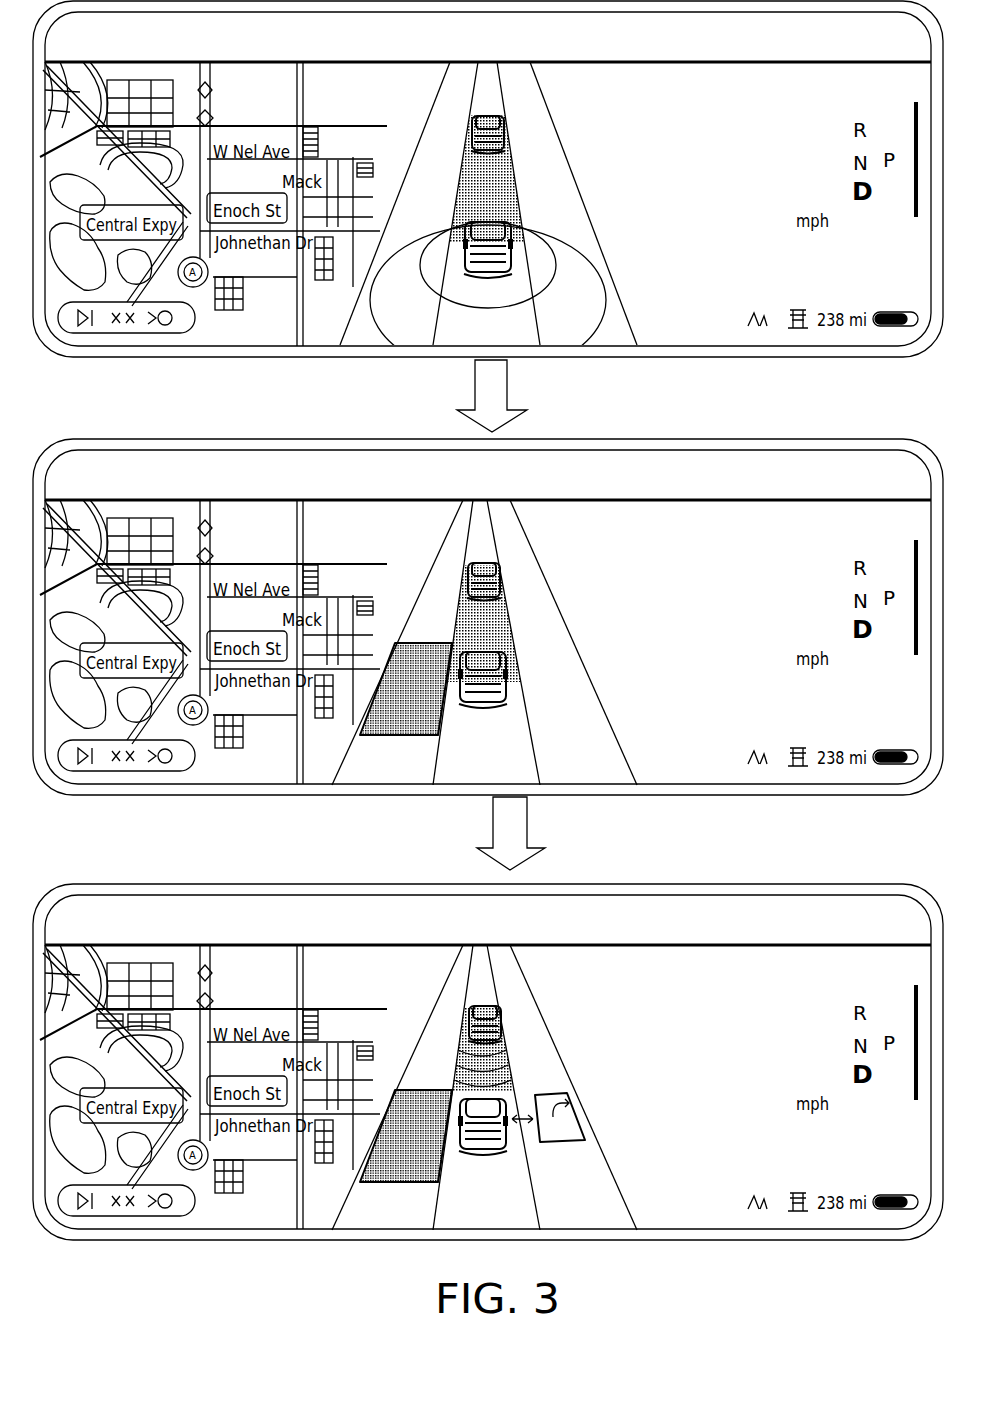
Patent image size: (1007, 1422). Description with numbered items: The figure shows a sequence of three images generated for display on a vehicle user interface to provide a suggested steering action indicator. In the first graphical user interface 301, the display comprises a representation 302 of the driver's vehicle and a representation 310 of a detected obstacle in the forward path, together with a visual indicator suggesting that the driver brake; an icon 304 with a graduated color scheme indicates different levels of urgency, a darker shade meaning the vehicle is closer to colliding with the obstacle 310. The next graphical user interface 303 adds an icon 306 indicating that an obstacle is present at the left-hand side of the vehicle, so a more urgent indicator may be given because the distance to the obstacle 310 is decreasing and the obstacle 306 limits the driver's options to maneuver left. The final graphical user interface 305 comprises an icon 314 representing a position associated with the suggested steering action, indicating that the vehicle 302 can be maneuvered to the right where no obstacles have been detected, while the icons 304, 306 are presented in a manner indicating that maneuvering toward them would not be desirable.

The graphical user interface 301 is at (275, 300).
The representation of the driver's vehicle 302 is at (458, 45).
The graphical user interface 303 is at (272, 742).
The icon 304 is at (507, 182).
The graphical user interface 305 is at (270, 1208).
The icon 306 is at (400, 678).
The representation of a detected obstacle 310 is at (500, 125).
The icon 314 is at (573, 1103).